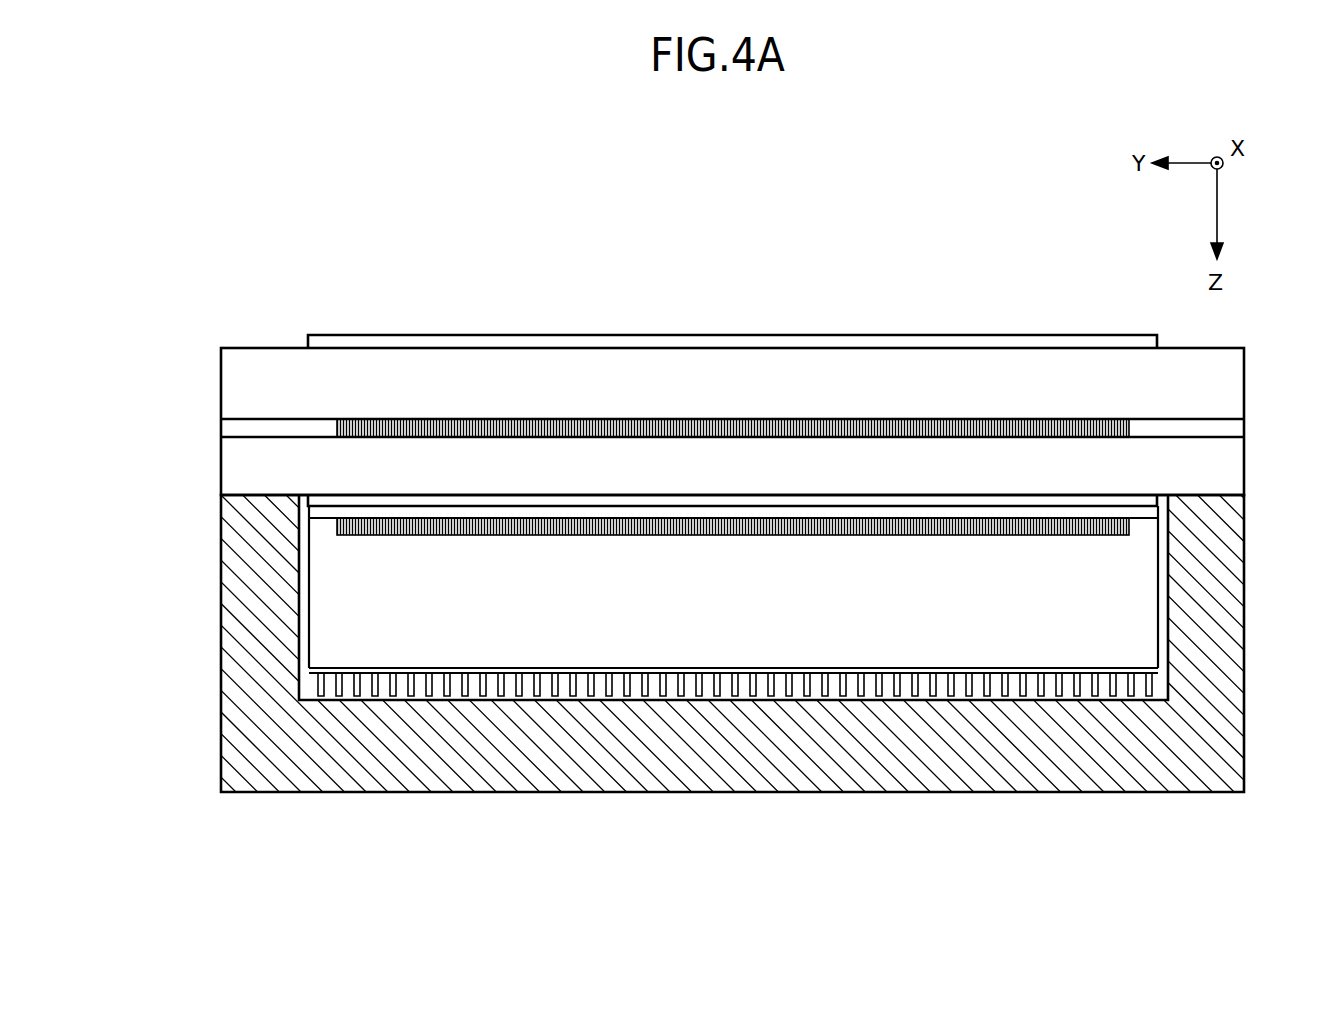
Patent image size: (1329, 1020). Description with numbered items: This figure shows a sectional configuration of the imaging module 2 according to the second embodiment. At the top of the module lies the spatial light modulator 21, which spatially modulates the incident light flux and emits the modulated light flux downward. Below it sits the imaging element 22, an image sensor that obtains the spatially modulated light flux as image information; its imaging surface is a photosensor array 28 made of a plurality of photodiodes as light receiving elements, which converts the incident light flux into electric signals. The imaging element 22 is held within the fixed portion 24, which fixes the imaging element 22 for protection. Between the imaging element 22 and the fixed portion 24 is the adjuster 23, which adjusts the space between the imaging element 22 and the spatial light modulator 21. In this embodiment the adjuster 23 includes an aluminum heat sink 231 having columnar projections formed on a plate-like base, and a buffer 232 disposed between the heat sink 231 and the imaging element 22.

The imaging module 2 is at (236, 325).
The spatial light modulator 21 is at (1199, 347).
The imaging element 22 is at (753, 612).
The adjuster 23 is at (655, 678).
The heat sink 231 is at (468, 683).
The buffer 232 is at (384, 665).
The fixed portion 24 is at (1247, 608).
The photosensor array 28 is at (1110, 518).